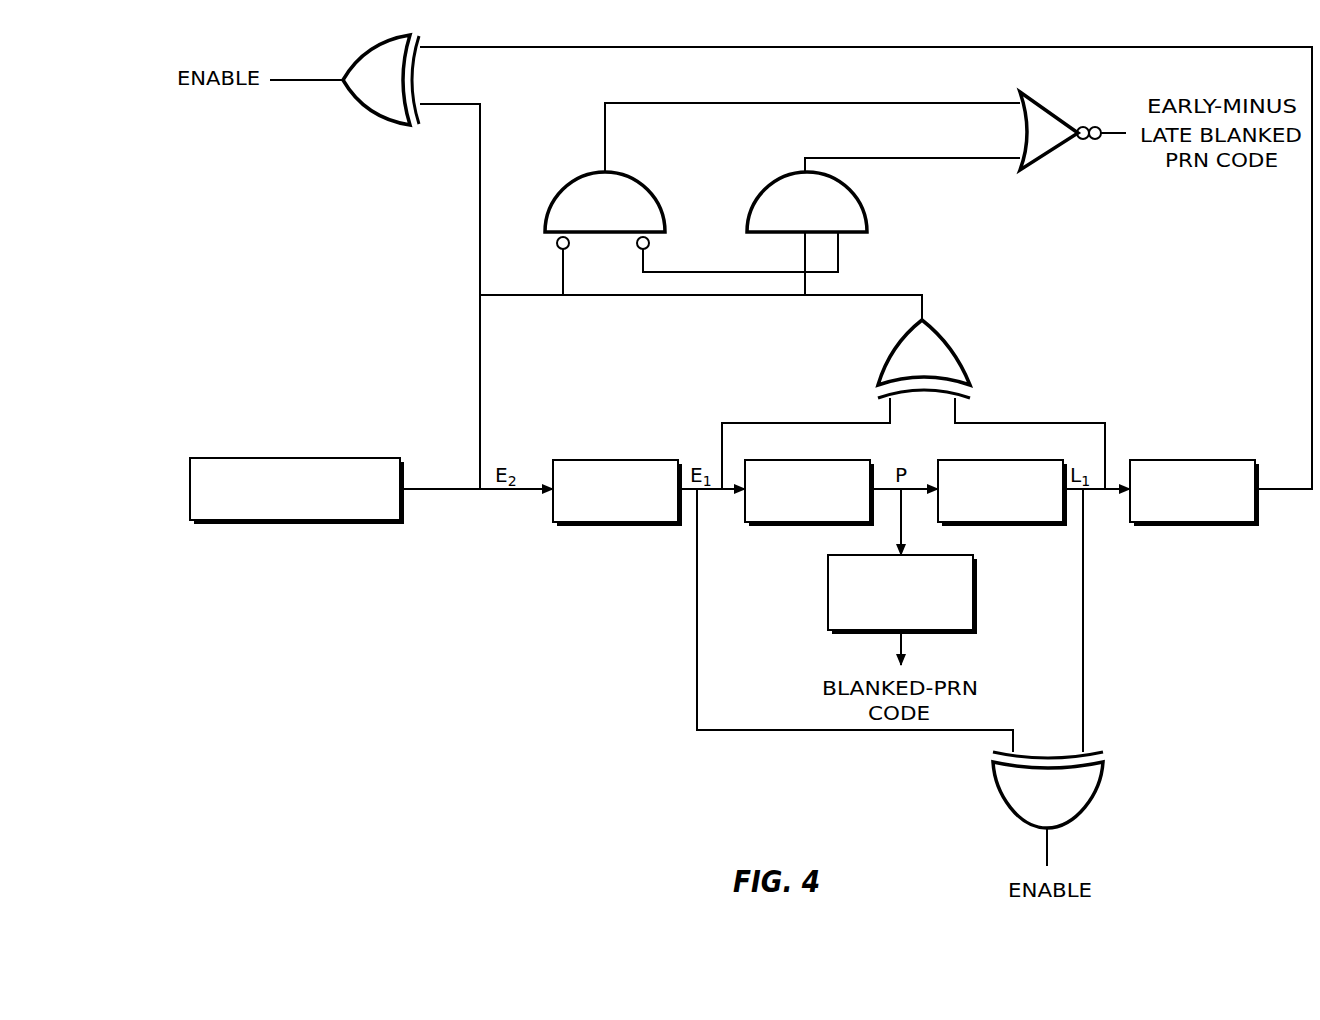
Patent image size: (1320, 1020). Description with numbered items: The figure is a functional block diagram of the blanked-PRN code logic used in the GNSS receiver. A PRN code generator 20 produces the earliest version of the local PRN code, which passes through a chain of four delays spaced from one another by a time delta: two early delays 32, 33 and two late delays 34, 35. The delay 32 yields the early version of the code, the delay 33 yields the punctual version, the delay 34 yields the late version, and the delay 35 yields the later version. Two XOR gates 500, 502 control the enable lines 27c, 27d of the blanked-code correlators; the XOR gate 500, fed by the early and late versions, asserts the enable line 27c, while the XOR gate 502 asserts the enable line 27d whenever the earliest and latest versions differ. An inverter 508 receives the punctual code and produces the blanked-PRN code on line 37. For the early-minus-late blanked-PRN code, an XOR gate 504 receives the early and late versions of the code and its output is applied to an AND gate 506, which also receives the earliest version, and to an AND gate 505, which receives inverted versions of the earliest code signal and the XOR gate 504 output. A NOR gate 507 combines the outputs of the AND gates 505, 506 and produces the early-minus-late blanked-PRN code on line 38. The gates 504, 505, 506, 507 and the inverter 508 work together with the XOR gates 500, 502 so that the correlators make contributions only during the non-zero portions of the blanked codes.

The PRN code generator 20 is at (222, 458).
The enable line 27c is at (1047, 855).
The enable line 27d is at (298, 82).
The delay 32 is at (617, 493).
The delay 33 is at (809, 493).
The delay 34 is at (1002, 493).
The delay 35 is at (1194, 493).
The line 37 is at (898, 640).
The line 38 is at (1107, 135).
The XOR gate 500 is at (1095, 800).
The XOR gate 502 is at (380, 115).
The XOR gate 504 is at (957, 350).
The AND gate 505 is at (562, 190).
The AND gate 506 is at (848, 190).
The NOR gate 507 is at (1040, 168).
The inverter 508 is at (902, 594).